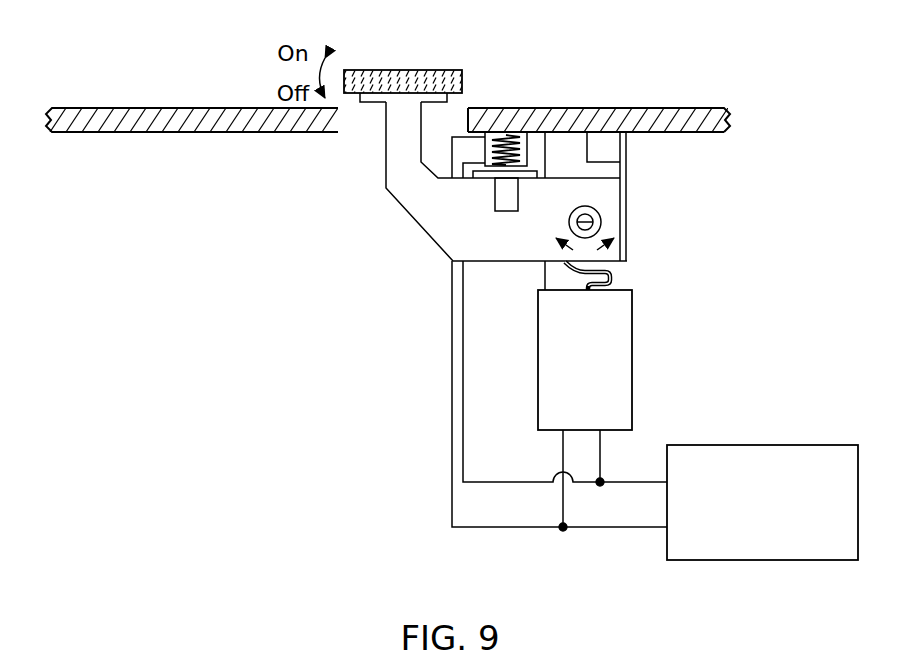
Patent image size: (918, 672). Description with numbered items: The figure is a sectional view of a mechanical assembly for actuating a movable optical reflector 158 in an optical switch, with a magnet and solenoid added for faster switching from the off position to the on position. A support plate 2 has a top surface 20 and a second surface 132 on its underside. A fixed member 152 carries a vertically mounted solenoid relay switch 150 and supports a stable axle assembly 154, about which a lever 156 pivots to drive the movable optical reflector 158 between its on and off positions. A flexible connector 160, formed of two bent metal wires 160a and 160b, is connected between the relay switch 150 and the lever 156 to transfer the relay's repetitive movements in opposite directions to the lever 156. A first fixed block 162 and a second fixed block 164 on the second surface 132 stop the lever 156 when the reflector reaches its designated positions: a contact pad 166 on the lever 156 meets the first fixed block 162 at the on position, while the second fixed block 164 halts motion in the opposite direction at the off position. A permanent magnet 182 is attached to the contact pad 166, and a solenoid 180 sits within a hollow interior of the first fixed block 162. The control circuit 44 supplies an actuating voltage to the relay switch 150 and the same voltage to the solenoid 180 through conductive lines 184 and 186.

The support plate 2 is at (656, 122).
The top surface 20 is at (572, 122).
The second surface 132 is at (705, 134).
The movable optical reflector 158 is at (412, 69).
The lever 156 is at (420, 218).
The fixed member 152 is at (612, 176).
The first fixed block 162 is at (522, 152).
The solenoid 180 is at (505, 140).
The contact pad 166 is at (530, 178).
The permanent magnet 182 is at (503, 200).
The second fixed block 164 is at (612, 150).
The axle assembly 154 is at (601, 222).
The flexible connector 160 is at (626, 268).
The bent metal wire 160a is at (628, 288).
The bent metal wire 160b is at (573, 267).
The solenoid relay switch 150 is at (633, 362).
The conductive line 184 is at (490, 482).
The conductive line 186 is at (499, 527).
The control circuit 44 is at (760, 458).